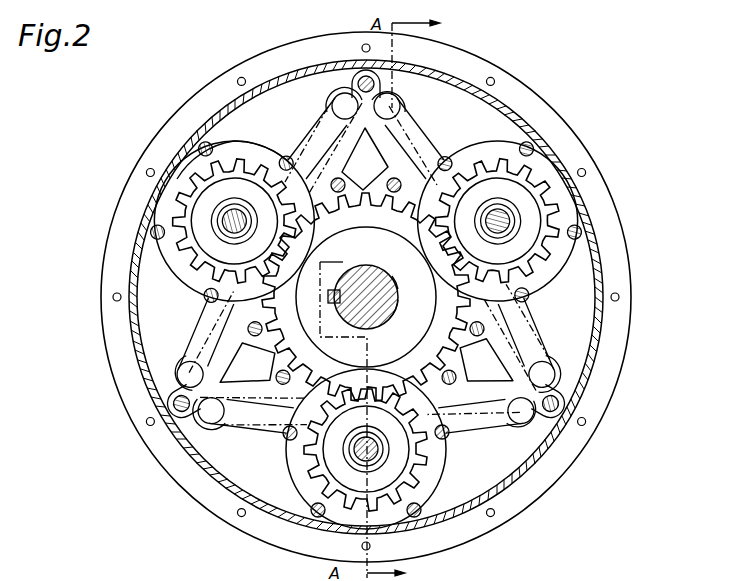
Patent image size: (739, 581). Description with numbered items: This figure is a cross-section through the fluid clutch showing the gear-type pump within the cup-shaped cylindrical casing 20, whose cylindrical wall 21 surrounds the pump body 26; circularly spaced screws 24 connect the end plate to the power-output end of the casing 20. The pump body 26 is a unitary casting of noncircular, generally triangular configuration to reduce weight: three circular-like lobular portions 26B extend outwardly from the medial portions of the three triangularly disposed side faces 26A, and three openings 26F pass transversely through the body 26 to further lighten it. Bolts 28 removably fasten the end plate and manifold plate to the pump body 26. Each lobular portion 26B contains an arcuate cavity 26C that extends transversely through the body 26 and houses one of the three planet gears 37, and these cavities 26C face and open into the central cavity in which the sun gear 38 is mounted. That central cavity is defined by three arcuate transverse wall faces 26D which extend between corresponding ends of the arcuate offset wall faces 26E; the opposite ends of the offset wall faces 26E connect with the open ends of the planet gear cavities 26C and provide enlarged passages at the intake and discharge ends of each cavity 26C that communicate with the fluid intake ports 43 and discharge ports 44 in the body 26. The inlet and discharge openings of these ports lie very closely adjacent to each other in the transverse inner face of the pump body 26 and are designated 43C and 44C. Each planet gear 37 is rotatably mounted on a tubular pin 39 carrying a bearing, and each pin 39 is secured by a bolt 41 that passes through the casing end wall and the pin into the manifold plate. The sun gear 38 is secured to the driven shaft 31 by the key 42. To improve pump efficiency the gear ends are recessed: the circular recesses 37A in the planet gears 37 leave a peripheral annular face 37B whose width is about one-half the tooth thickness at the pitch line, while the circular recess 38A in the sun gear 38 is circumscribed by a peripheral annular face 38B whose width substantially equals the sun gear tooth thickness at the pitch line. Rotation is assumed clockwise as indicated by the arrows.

The cup-shaped cylindrical casing 20 is at (566, 112).
The cylindrical wall 21 is at (522, 138).
The screws 24 is at (363, 46).
The pump body 26 is at (300, 104).
The side faces 26A is at (232, 138).
The lobular portions 26B is at (230, 140).
The arcuate cavities 26C is at (185, 258).
The arcuate transverse wall faces 26D is at (372, 190).
The offset wall faces 26E is at (203, 284).
The openings 26F is at (320, 128).
The bolts 28 is at (358, 74).
The driven shaft 31 is at (374, 318).
The planet gears 37 is at (177, 207).
The circular recesses 37A is at (203, 222).
The peripheral annular face 37B is at (503, 190).
The sun gear 38 is at (267, 313).
The circular recess 38A is at (427, 272).
The peripheral annular face 38B is at (430, 293).
The tubular pin 39 is at (230, 213).
The bolt 41 is at (220, 213).
The key 42 is at (330, 292).
The intake ports 43 is at (426, 130).
The inlet port opening 43C is at (396, 100).
The discharge ports 44 is at (258, 78).
The discharge port opening 44C is at (345, 100).